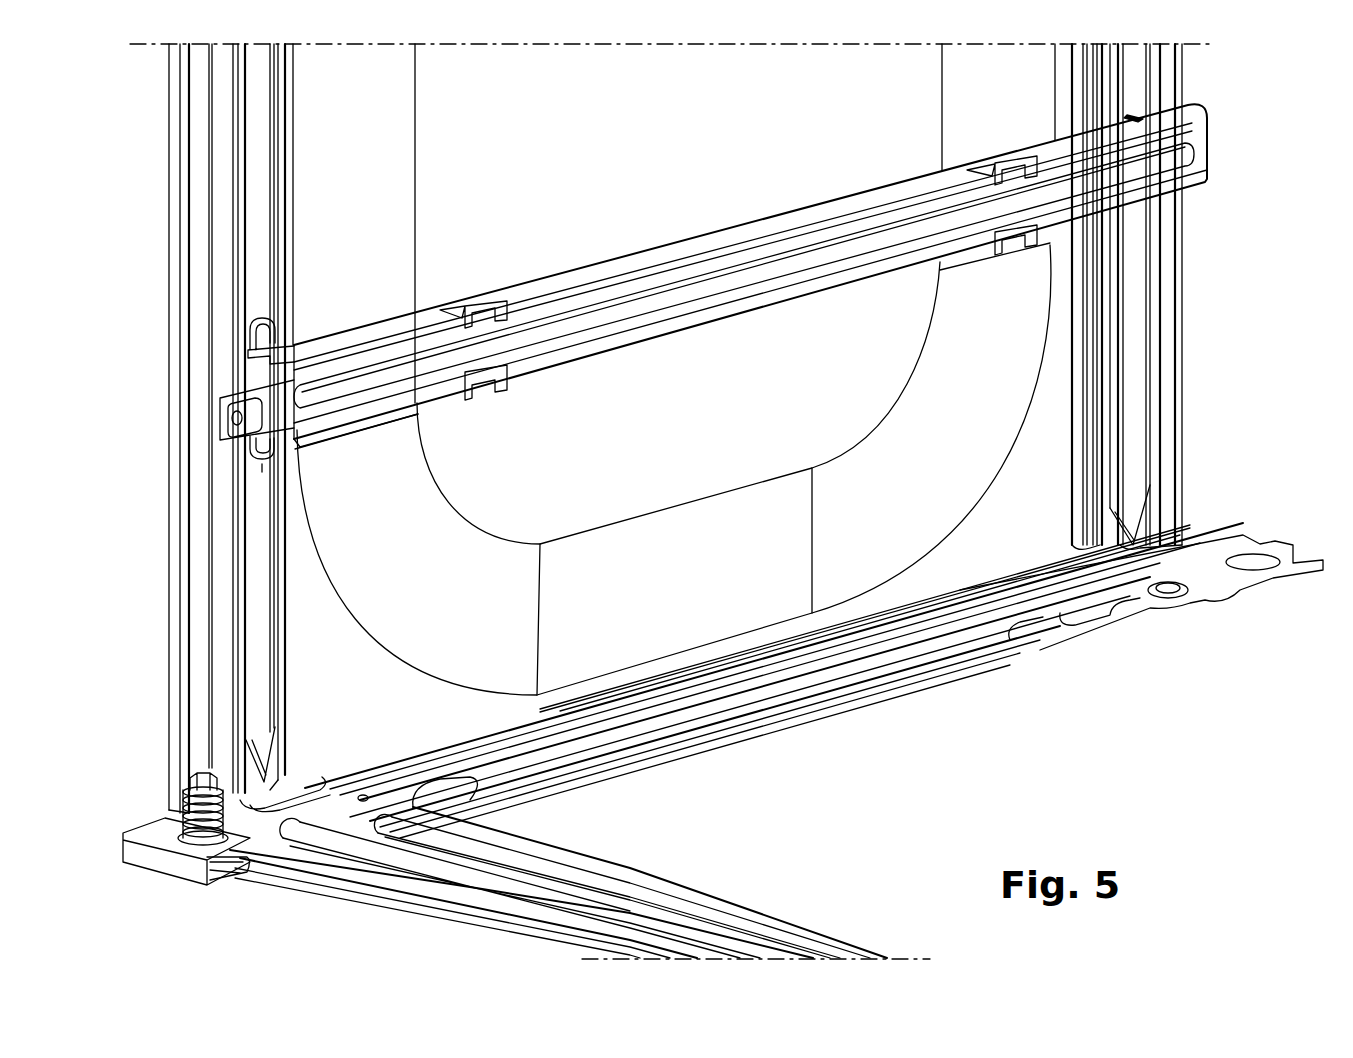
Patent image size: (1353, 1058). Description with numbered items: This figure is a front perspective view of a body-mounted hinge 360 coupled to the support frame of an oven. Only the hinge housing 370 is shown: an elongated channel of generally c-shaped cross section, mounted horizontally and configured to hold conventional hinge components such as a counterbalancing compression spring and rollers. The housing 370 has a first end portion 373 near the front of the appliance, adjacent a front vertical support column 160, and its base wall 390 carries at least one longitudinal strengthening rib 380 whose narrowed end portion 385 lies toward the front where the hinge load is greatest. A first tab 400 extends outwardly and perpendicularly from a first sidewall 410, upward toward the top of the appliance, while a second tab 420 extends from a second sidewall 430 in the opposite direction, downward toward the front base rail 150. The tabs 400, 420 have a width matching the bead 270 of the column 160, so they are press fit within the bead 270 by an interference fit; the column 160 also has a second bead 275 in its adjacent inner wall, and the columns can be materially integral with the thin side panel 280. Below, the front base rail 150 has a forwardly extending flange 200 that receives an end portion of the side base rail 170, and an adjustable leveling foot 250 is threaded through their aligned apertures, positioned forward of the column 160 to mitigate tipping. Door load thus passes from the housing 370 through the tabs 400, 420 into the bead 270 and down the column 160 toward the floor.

The front base rail 150 is at (510, 915).
The vertical support column 160 is at (285, 143).
The side base rail 170 is at (1060, 622).
The forwardly extending flange 200 is at (157, 862).
The foot 250 is at (247, 873).
The bead 270 is at (258, 713).
The second bead 275 is at (1100, 487).
The side panel 280 is at (793, 460).
The body-mounted hinge 360 is at (713, 296).
The hinge housing 370 is at (808, 218).
The first end portion 373 is at (265, 468).
The strengthening rib 380 is at (620, 305).
The narrowed end portion 385 is at (323, 393).
The base wall 390 is at (352, 414).
The first tab 400 is at (250, 320).
The first sidewall 410 is at (398, 317).
The second tab 420 is at (250, 455).
The second sidewall 430 is at (805, 291).